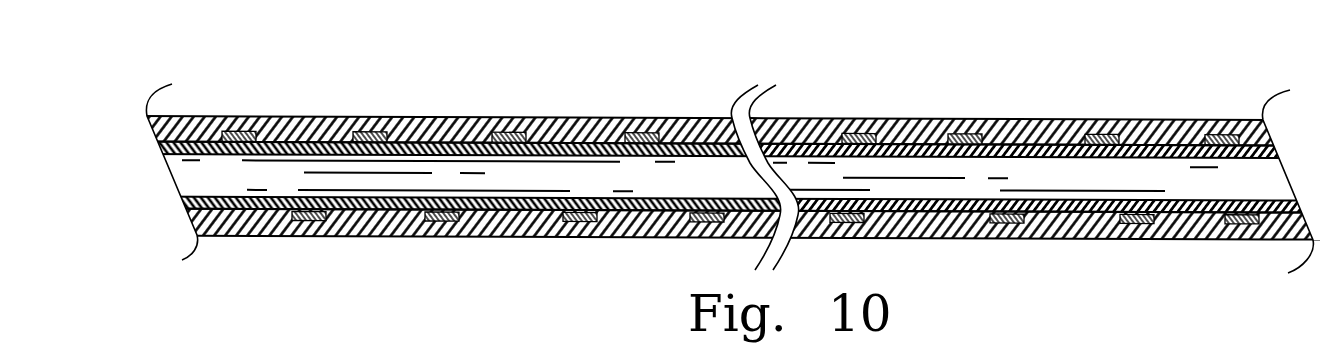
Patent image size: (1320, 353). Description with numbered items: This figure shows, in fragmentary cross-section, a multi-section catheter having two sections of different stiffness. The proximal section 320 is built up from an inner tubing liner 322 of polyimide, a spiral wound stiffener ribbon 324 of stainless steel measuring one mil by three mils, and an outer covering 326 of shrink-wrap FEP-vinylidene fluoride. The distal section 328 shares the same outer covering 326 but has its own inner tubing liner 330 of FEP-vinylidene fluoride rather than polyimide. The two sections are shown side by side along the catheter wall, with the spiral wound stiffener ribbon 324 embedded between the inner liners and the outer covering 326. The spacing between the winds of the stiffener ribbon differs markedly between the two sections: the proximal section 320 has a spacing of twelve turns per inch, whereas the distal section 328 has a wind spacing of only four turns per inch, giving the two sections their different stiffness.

The proximal section 320 is at (913, 62).
The distal section 328 is at (1257, 66).
The inner tubing liner 322 is at (497, 197).
The spiral wound stiffener ribbon 324 is at (303, 237).
The outer covering 326 is at (620, 237).
The inner tubing liner 330 is at (1190, 197).